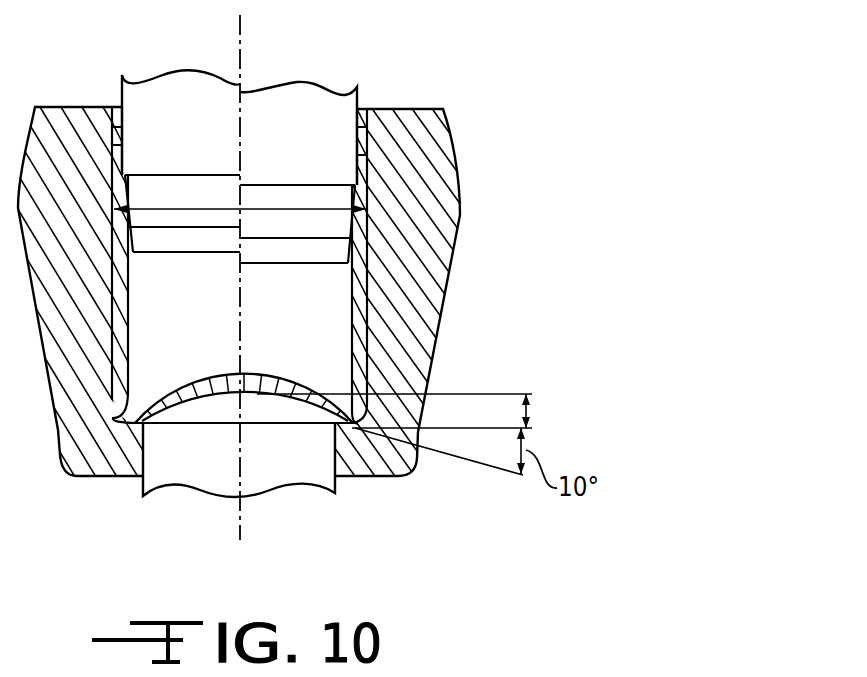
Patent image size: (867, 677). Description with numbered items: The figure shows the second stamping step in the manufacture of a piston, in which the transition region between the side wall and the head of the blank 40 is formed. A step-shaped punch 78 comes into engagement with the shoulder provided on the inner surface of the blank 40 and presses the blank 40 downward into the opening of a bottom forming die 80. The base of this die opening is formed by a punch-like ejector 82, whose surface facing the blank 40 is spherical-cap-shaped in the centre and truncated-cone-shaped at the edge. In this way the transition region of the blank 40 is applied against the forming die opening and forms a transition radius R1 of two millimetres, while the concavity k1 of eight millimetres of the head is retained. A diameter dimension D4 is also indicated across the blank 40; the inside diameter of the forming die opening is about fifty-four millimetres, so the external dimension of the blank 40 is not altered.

The punch 78 is at (287, 114).
The bottom forming die 80 is at (460, 234).
The blank 40 is at (357, 272).
The ejector 82 is at (277, 470).
The diameter D4 is at (238, 207).
The transition radius R1 is at (348, 414).
The concavity k1 is at (570, 385).